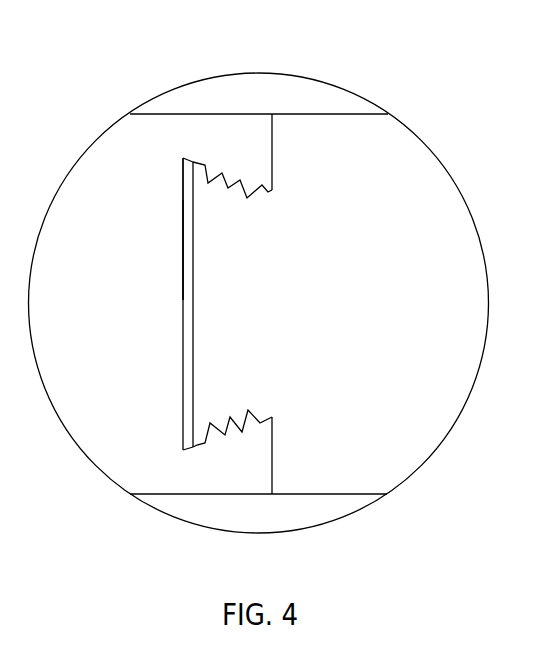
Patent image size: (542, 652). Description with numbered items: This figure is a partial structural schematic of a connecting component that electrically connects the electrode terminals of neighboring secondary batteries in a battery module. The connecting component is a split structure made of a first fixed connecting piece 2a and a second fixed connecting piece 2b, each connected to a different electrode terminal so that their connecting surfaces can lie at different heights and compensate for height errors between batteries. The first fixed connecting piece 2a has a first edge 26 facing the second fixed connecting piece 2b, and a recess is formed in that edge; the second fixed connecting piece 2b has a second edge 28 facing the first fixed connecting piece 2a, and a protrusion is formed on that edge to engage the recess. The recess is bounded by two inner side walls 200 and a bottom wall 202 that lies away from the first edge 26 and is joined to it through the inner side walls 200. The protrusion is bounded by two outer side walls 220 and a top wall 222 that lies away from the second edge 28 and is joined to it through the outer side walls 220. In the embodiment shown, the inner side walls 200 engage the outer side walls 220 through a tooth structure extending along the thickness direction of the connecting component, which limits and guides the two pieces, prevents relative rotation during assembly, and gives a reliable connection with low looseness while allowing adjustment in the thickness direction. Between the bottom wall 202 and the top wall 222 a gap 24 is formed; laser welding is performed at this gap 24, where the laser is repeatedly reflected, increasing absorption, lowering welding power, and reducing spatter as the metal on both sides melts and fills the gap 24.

The first fixed connecting piece 2a is at (133, 170).
The second fixed connecting piece 2b is at (397, 205).
The gap 24 is at (192, 321).
The first edge 26 is at (265, 133).
The second edge 28 is at (277, 132).
The inner side walls 200 is at (183, 160).
The bottom wall 202 is at (185, 238).
The outer side walls 220 is at (270, 190).
The top wall 222 is at (193, 272).